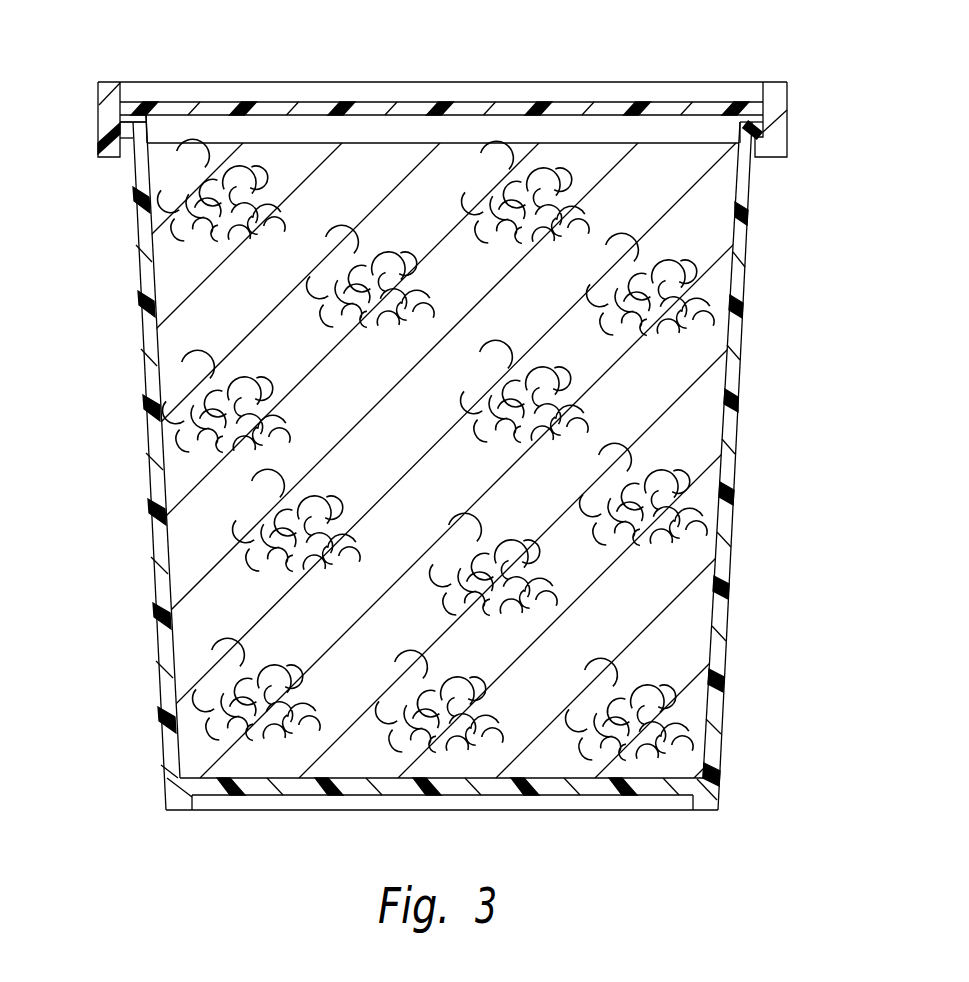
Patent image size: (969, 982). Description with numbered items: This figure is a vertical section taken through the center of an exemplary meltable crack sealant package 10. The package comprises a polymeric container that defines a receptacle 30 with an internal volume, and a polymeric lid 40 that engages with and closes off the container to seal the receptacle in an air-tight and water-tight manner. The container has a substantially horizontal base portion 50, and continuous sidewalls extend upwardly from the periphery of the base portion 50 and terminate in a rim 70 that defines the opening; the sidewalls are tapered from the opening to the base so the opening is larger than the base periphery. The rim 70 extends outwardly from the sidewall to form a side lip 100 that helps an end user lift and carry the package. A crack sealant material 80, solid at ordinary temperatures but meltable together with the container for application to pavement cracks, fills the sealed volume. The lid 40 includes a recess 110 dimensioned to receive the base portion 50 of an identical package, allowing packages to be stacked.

The crack sealant package 10 is at (90, 402).
The receptacle 30 is at (147, 133).
The polymeric lid 40 is at (98, 115).
The base portion 50 is at (707, 810).
The rim 70 is at (765, 128).
The crack sealant material 80 is at (557, 397).
The side lip 100 is at (770, 157).
The recess 110 is at (521, 100).